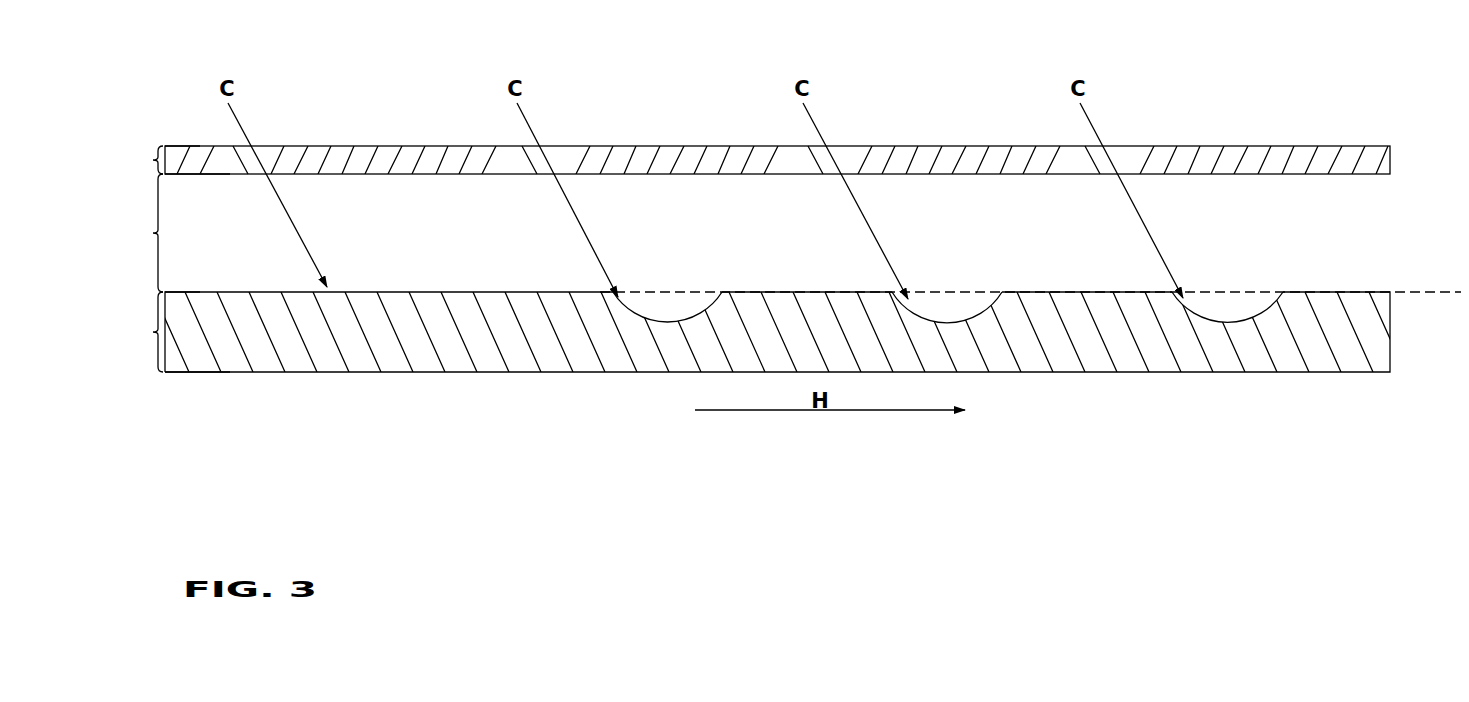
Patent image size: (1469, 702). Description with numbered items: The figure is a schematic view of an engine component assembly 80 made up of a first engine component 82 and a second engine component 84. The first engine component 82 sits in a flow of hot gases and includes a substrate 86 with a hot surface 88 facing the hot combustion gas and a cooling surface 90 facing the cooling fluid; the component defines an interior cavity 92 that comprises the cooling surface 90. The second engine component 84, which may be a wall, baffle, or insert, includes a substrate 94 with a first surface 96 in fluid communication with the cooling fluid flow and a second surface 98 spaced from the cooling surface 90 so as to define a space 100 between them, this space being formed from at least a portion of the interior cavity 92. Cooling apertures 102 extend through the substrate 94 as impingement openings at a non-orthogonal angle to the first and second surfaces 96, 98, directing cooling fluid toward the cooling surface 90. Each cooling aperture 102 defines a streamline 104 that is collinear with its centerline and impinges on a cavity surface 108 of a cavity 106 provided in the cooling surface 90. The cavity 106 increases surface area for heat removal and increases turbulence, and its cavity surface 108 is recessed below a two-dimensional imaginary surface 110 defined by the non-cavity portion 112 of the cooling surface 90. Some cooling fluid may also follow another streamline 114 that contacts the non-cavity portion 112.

The engine component assembly 80 is at (361, 45).
The first engine component 82 is at (1400, 300).
The second engine component 84 is at (1398, 161).
The substrate 86 is at (140, 332).
The hot surface 88 is at (215, 372).
The cooling surface 90 is at (192, 292).
The interior cavity 92 is at (904, 210).
The substrate 94 is at (139, 160).
The first surface 96 is at (207, 145).
The second surface 98 is at (225, 175).
The space 100 is at (132, 233).
The cooling aperture 102 is at (282, 158).
The streamline 104 is at (557, 180).
The cavity 106 is at (617, 313).
The cavity surface 108 is at (698, 312).
The imaginary surface 110 is at (1433, 297).
The non-cavity portion 112 is at (498, 292).
The streamline 114 is at (268, 182).